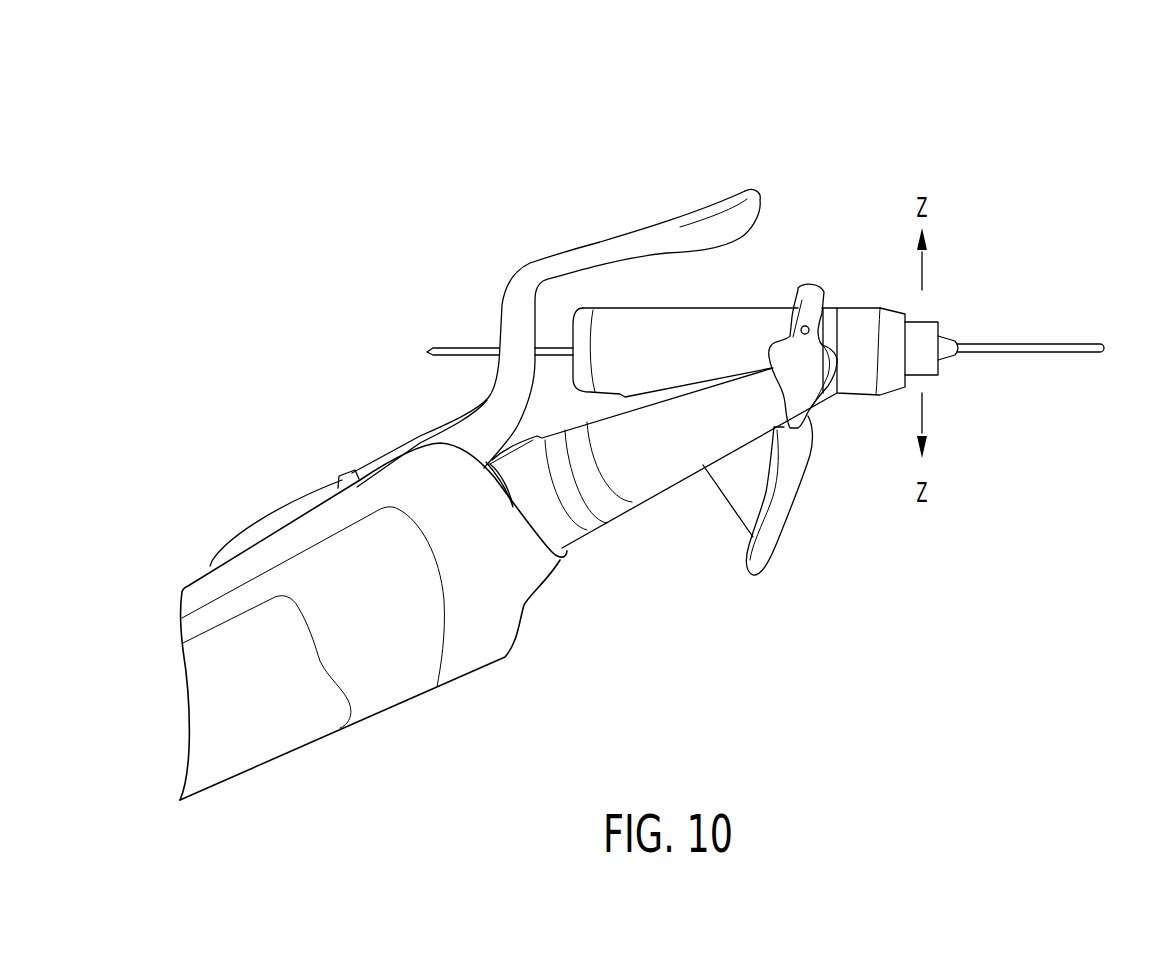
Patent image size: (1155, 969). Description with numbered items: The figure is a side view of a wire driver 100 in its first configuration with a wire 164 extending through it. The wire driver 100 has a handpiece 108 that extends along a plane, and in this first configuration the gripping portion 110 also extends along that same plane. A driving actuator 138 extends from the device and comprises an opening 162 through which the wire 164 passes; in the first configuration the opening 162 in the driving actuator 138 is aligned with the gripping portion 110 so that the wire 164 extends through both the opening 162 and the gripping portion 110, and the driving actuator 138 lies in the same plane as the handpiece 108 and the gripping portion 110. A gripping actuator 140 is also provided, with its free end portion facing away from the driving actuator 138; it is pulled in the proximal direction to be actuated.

The wire driver 100 is at (771, 121).
The handpiece 108 is at (306, 490).
The gripping portion 110 is at (760, 306).
The driving actuator 138 is at (528, 244).
The gripping actuator 140 is at (730, 573).
The opening 162 is at (488, 328).
The wire 164 is at (1092, 357).